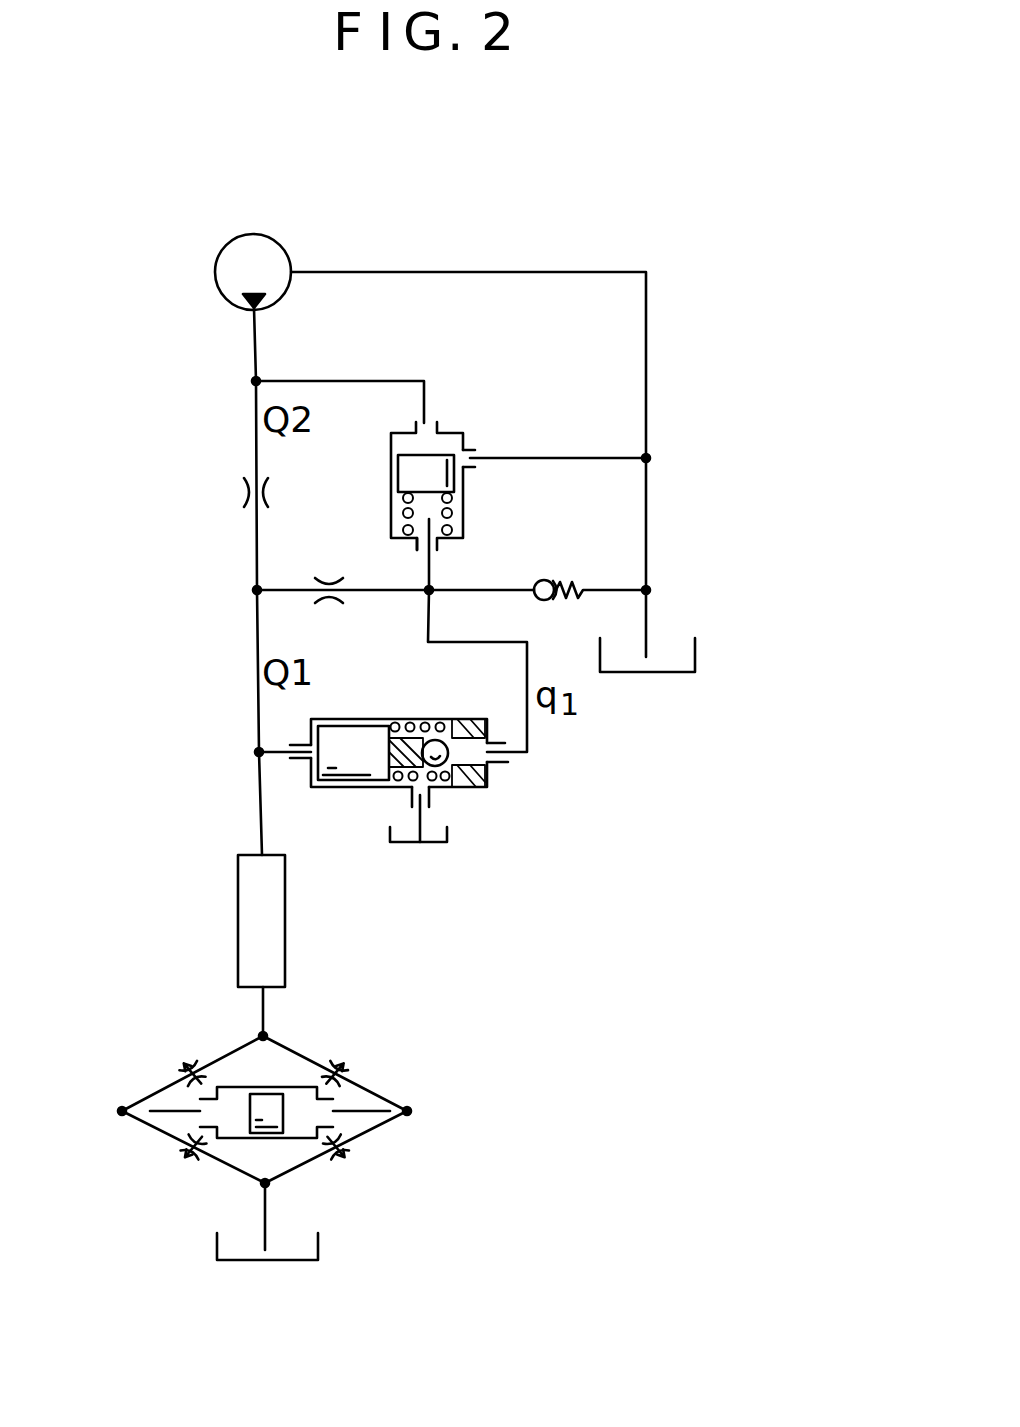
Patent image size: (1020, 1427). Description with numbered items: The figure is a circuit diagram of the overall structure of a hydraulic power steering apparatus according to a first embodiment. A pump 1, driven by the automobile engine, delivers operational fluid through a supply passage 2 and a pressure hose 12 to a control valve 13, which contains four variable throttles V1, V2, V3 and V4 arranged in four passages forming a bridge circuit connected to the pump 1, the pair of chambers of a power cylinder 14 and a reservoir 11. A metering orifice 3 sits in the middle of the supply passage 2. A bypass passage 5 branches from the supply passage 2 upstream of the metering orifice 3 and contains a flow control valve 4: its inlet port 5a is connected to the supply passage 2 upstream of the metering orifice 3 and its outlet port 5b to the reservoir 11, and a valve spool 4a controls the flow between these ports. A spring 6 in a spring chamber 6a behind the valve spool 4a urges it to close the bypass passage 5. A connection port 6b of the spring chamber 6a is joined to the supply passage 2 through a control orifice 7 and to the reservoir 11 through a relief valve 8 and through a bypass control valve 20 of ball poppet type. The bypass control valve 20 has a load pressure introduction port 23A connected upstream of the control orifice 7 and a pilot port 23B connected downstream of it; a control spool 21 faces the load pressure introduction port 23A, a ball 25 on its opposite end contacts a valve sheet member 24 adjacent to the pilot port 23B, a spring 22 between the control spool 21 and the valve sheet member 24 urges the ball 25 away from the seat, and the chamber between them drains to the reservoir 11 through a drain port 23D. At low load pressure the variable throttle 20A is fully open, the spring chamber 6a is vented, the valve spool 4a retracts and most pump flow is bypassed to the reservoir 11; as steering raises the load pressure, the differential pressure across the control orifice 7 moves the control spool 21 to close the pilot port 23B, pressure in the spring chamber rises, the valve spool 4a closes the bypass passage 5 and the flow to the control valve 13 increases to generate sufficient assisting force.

The pump 1 is at (266, 234).
The supply passage 2 is at (256, 556).
The metering orifice 3 is at (238, 492).
The flow control valve 4 is at (391, 452).
The valve spool 4a is at (398, 475).
The bypass passage 5 is at (597, 455).
The inlet port 5a is at (433, 423).
The outlet port 5b is at (470, 458).
The spring 6 is at (462, 505).
The spring chamber 6a is at (432, 535).
The connection port 6b is at (420, 552).
The control orifice 7 is at (330, 606).
The relief valve 8 is at (562, 577).
The reservoir 11 is at (695, 652).
The pressure hose 12 is at (238, 912).
The control valve 13 is at (388, 1083).
The power cylinder 14 is at (275, 1148).
The bypass control valve 20 is at (363, 719).
The variable throttle 20A is at (453, 747).
The control spool 21 is at (348, 772).
The spring 22 is at (425, 722).
The load pressure introduction port 23A is at (308, 758).
The pilot port 23B is at (498, 745).
The drain port 23D is at (412, 805).
The valve sheet member 24 is at (478, 787).
The ball 25 is at (440, 782).
The variable throttle V1 is at (177, 1053).
The variable throttle V2 is at (348, 1053).
The variable throttle V3 is at (179, 1174).
The variable throttle V4 is at (353, 1174).